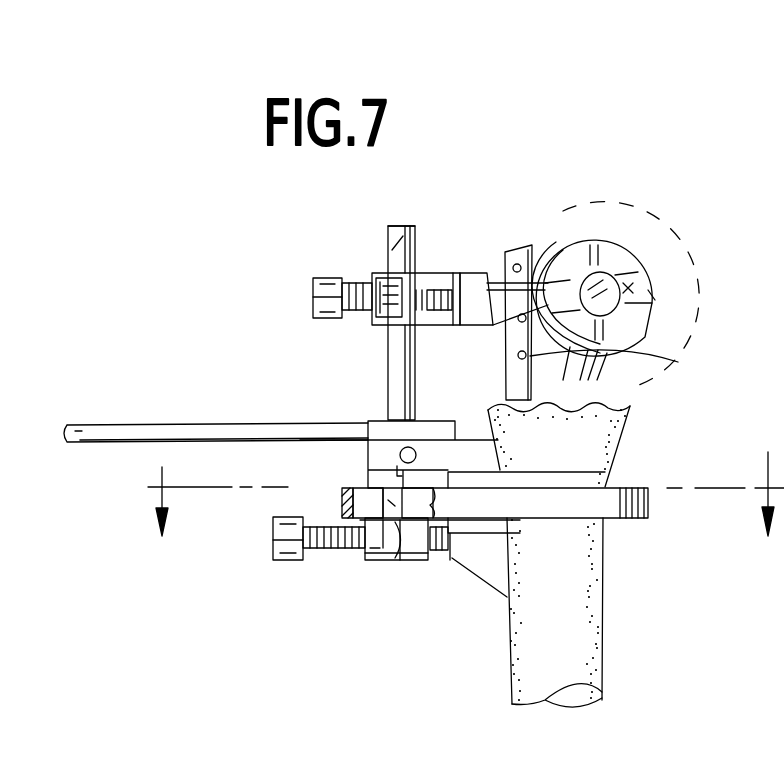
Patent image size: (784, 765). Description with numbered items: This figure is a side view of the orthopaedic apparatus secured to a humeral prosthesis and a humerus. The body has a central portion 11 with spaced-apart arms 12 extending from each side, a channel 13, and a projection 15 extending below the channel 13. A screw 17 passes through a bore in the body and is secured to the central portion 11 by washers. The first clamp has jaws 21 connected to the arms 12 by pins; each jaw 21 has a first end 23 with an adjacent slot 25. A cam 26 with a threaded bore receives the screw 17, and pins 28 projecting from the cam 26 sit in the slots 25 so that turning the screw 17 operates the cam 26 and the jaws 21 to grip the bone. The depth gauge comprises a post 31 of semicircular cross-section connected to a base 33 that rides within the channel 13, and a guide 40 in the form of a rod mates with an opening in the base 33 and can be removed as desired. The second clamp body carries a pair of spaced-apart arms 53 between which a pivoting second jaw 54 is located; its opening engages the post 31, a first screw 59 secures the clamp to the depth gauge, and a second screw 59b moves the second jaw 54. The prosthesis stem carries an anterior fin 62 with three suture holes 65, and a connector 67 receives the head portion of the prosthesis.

The central portion 11 is at (382, 472).
The arms 12 is at (503, 478).
The channel 13 is at (412, 438).
The projection 15 is at (478, 558).
The screw 17 is at (295, 563).
The jaws 21 is at (572, 505).
The first end 23 is at (341, 505).
The slot 25 is at (366, 551).
The cam 26 is at (418, 552).
The pins 28 is at (402, 525).
The post 31 is at (398, 243).
The base 33 is at (382, 425).
The guide 40 is at (98, 434).
The arms 53 is at (463, 282).
The second jaw 54 is at (547, 268).
The first screw 59 is at (313, 293).
The second screw 59b is at (378, 318).
The anterior fin 62 is at (507, 297).
The suture holes 65 is at (512, 264).
The connector 67 is at (641, 277).